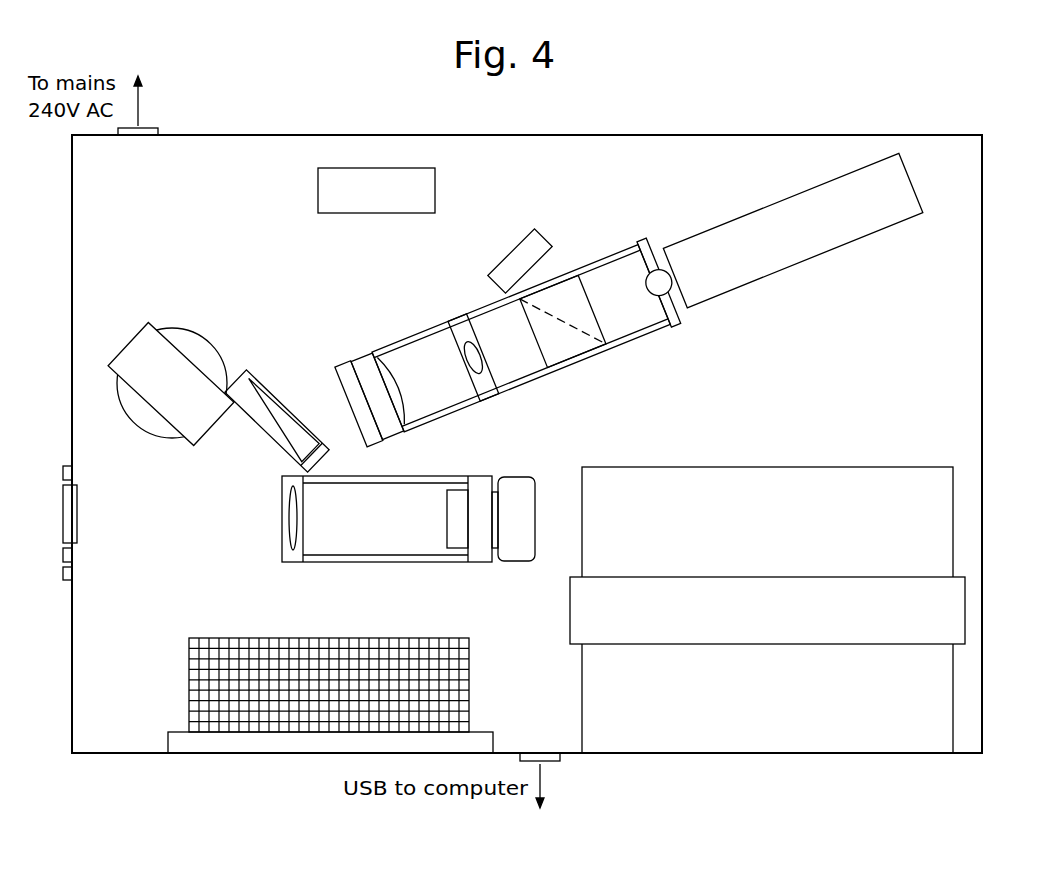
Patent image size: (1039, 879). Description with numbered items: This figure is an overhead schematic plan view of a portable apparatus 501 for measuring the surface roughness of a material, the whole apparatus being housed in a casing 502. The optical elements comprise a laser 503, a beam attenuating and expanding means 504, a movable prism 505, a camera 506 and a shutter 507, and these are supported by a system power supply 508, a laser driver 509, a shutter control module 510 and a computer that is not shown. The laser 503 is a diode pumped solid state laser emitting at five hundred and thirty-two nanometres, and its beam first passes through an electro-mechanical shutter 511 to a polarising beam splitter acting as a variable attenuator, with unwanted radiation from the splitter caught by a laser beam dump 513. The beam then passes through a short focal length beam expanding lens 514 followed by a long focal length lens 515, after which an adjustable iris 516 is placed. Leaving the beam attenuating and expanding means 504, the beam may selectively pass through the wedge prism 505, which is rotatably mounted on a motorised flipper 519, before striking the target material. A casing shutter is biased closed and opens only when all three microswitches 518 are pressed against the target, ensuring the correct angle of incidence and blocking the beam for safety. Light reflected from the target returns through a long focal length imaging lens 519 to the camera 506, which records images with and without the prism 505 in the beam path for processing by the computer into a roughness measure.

The portable apparatus 501 is at (606, 160).
The casing 502 is at (1010, 290).
The laser 503 is at (792, 230).
The beam attenuating and expanding means 504 is at (526, 336).
The movable prism 505 is at (275, 438).
The camera 506 is at (520, 477).
The shutter 507 is at (105, 508).
The system power supply 508 is at (189, 682).
The laser driver 509 is at (822, 467).
The shutter control module 510 is at (318, 196).
The electro-mechanical shutter 511 is at (659, 283).
The laser beam dump 513 is at (515, 247).
The beam expanding lens 514 is at (473, 357).
The long focal length lens 515 is at (382, 394).
The adjustable iris 516 is at (359, 404).
The microswitches 518 is at (63, 473).
The flipper 519 is at (177, 332).